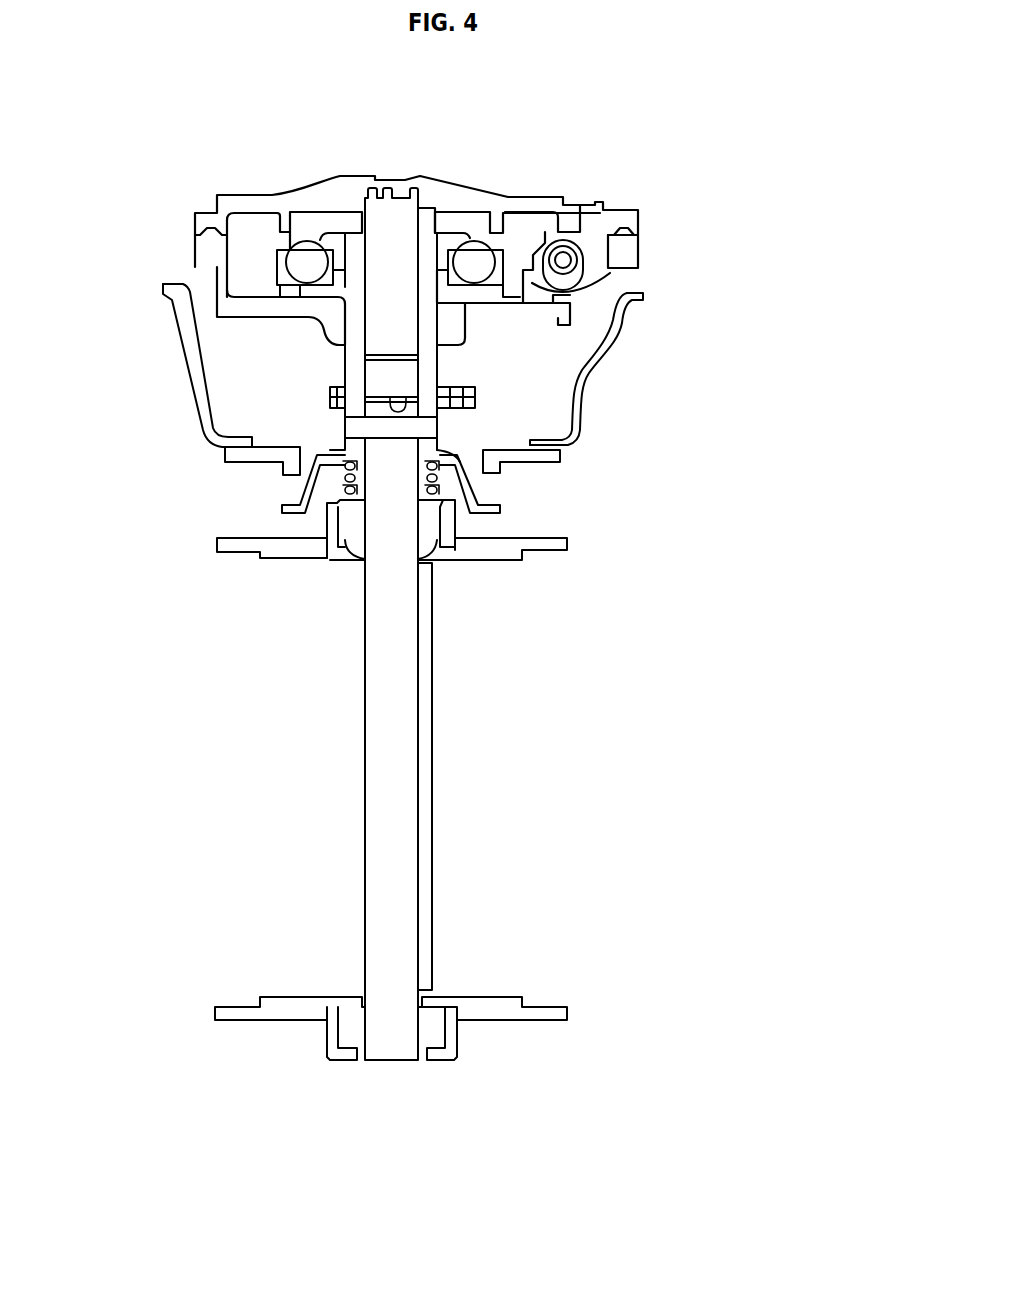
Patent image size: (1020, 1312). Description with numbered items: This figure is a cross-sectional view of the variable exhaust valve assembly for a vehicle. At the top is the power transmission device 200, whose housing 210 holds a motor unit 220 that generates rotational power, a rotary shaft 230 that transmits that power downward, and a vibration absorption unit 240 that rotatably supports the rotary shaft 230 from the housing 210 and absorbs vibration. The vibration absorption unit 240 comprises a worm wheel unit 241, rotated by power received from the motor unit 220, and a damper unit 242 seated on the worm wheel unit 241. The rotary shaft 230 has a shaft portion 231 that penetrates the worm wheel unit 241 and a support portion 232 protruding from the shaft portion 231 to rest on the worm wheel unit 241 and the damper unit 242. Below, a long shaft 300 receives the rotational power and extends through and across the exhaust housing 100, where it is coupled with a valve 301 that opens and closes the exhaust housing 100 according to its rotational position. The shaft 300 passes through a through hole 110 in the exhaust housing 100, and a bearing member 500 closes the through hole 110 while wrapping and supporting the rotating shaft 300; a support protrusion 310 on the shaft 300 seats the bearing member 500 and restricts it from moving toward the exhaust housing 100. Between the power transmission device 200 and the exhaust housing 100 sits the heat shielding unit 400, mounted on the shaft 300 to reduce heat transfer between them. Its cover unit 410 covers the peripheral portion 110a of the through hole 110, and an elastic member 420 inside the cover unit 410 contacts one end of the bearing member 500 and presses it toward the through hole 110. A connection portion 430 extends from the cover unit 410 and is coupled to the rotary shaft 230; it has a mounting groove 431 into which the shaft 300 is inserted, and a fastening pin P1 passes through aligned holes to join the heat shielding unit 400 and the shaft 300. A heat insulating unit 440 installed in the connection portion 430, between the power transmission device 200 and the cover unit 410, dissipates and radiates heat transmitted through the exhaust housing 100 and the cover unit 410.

The exhaust housing 100 is at (515, 1025).
The through hole 110 is at (348, 556).
The peripheral portion 110a is at (445, 553).
The power transmission device 200 is at (527, 190).
The housing 210 is at (303, 198).
The motor unit 220 is at (565, 258).
The rotary shaft 230 is at (424, 92).
The shaft portion 231 is at (383, 252).
The support portion 232 is at (312, 243).
The vibration absorption unit 240 is at (765, 302).
The worm wheel unit 241 is at (523, 282).
The damper unit 242 is at (478, 323).
The shaft 300 is at (360, 850).
The valve 301 is at (430, 838).
The support protrusion 310 is at (432, 565).
The heat shielding unit 400 is at (312, 453).
The cover unit 410 is at (478, 494).
The elastic member 420 is at (343, 490).
The connection portion 430 is at (352, 378).
The mounting groove 431 is at (400, 395).
The heat insulating unit 440 is at (356, 397).
The bearing member 500 is at (318, 530).
The fastening pin P1 is at (418, 430).